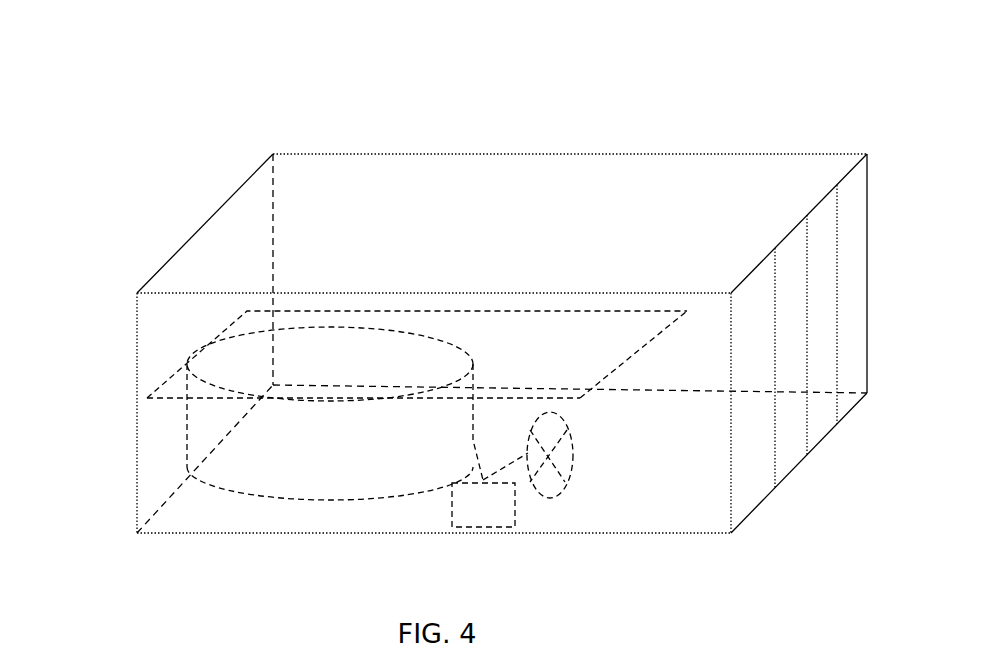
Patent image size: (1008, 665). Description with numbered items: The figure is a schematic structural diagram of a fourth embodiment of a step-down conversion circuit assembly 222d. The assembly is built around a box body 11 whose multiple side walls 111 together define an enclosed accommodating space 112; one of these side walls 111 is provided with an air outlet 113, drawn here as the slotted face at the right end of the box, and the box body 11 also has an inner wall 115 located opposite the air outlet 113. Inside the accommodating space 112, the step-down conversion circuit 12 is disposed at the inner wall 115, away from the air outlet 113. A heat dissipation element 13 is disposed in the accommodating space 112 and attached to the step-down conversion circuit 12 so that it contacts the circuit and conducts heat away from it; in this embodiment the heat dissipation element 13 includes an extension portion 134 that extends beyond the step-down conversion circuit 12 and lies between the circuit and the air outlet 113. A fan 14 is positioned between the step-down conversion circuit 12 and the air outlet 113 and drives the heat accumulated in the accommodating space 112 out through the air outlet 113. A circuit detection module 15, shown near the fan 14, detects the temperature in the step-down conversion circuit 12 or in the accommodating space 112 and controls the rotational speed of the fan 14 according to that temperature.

The step-down conversion circuit assembly 222d is at (515, 98).
The box body 11 is at (662, 153).
The side walls 111 is at (293, 160).
The accommodating space 112 is at (665, 493).
The air outlet 113 is at (748, 447).
The inner wall 115 is at (158, 473).
The extension portion 134 is at (625, 340).
The step-down conversion circuit 12 is at (202, 425).
The heat dissipation element 13 is at (292, 320).
The fan 14 is at (540, 468).
The circuit detection module 15 is at (480, 497).